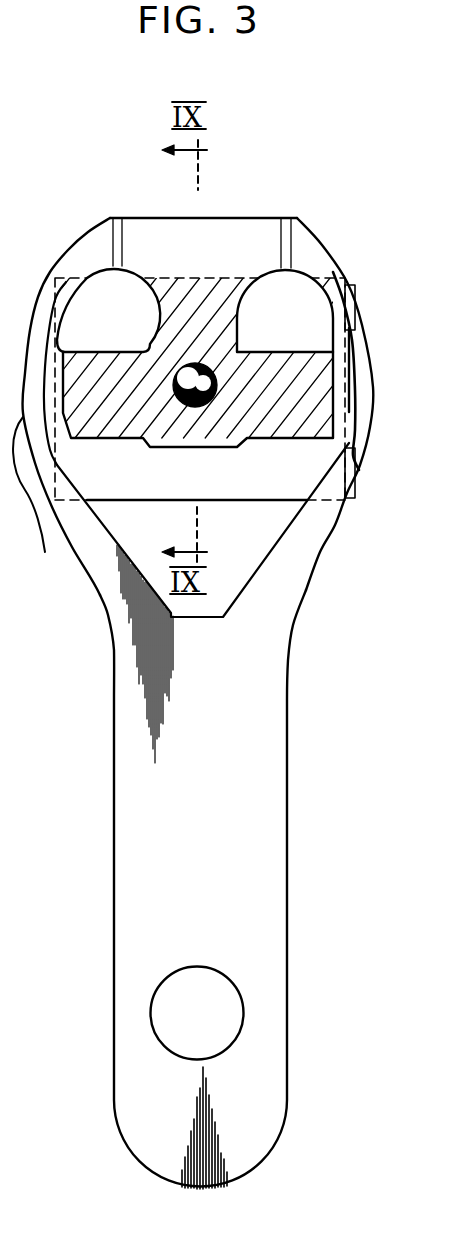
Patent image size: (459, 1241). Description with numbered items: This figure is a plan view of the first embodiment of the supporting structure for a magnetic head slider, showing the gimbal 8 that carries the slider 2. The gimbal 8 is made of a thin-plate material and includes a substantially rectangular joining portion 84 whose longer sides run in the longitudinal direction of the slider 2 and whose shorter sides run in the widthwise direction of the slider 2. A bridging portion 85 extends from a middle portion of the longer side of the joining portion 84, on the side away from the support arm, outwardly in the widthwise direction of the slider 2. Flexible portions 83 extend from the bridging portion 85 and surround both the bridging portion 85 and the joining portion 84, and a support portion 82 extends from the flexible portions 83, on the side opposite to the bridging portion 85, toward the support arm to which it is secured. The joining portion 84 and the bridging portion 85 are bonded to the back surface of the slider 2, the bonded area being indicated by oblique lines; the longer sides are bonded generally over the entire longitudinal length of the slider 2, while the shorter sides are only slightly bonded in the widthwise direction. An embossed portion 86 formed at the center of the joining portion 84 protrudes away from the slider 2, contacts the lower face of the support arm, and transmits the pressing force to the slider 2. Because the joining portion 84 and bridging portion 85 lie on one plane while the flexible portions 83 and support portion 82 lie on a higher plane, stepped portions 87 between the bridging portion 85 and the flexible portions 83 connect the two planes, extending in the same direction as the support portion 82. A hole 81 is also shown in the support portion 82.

The slider 2 is at (270, 502).
The gimbal 8 is at (197, 703).
The hole 81 is at (207, 985).
The support portion 82 is at (277, 861).
The flexible portions 83 is at (374, 390).
The joining portion 84 is at (348, 322).
The bridging portion 85 is at (240, 307).
The embossed portion 86 is at (190, 409).
The stepped portions 87 is at (273, 242).